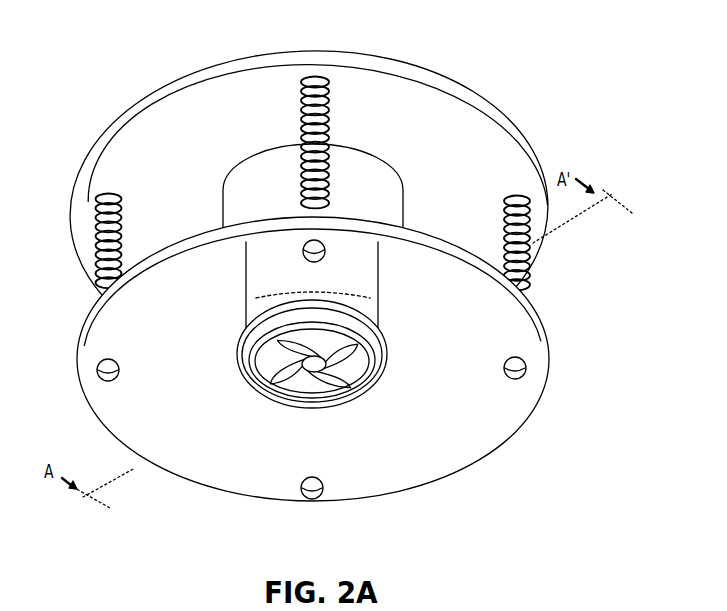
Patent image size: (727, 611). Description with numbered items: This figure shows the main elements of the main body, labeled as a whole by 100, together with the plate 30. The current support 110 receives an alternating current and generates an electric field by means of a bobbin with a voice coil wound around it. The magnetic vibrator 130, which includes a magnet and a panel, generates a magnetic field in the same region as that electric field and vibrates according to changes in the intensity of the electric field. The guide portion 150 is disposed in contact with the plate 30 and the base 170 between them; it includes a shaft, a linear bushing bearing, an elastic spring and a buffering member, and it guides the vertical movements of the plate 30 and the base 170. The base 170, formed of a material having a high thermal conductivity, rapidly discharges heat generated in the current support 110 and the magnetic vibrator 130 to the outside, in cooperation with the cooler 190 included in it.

The assembly 100 is at (318, 275).
The plate 30 is at (396, 106).
The current support 110 is at (240, 313).
The magnetic vibrator 130 is at (233, 175).
The guide portion 150 is at (534, 256).
The base 170 is at (524, 432).
The cooler 190 is at (338, 410).